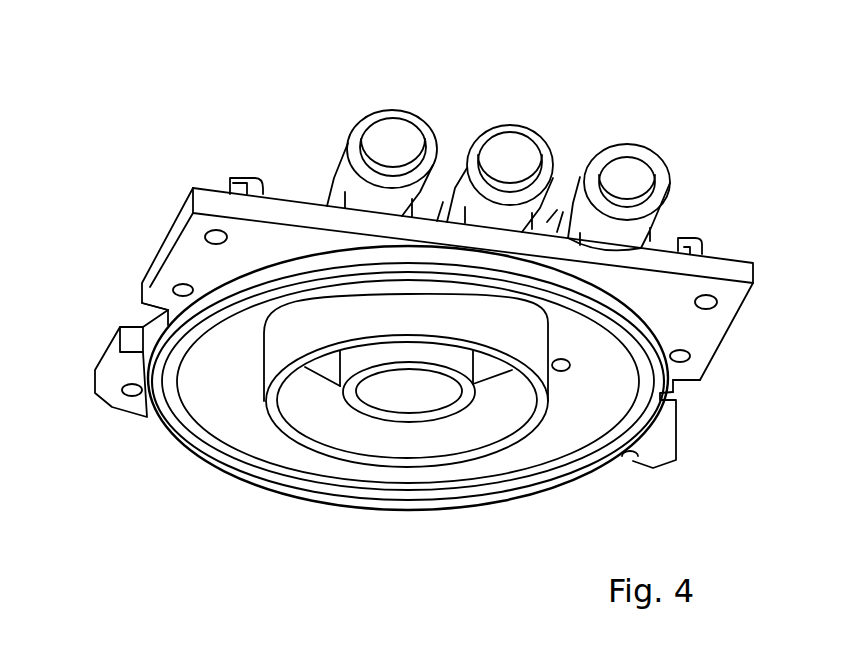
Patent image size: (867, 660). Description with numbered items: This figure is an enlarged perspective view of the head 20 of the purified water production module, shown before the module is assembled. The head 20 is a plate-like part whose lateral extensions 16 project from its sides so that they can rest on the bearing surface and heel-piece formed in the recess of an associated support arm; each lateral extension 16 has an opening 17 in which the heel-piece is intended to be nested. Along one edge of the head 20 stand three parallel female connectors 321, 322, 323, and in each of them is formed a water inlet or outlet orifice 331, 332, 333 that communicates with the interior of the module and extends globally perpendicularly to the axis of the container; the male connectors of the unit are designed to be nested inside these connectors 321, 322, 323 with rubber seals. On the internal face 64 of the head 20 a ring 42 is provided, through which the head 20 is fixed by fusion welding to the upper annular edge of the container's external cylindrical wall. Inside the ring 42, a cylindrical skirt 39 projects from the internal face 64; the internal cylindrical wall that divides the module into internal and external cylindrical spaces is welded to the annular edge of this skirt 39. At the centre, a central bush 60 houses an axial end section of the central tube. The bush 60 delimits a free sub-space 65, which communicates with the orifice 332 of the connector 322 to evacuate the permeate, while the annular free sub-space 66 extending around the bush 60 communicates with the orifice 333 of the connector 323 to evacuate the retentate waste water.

The head 20 is at (290, 126).
The lateral extension 16 is at (112, 390).
The opening 17 is at (138, 310).
The connector 321 is at (660, 158).
The connector 322 is at (531, 140).
The connector 323 is at (419, 124).
The water inlet or outlet orifice 331 is at (621, 162).
The water inlet or outlet orifice 332 is at (500, 122).
The water inlet or outlet orifice 333 is at (384, 122).
The ring 42 is at (203, 458).
The annular free sub-space 66 is at (306, 412).
The cylindrical skirt 39 is at (498, 456).
The internal face 64 is at (564, 424).
The central bush 60 is at (367, 413).
The free sub-space 65 is at (414, 391).